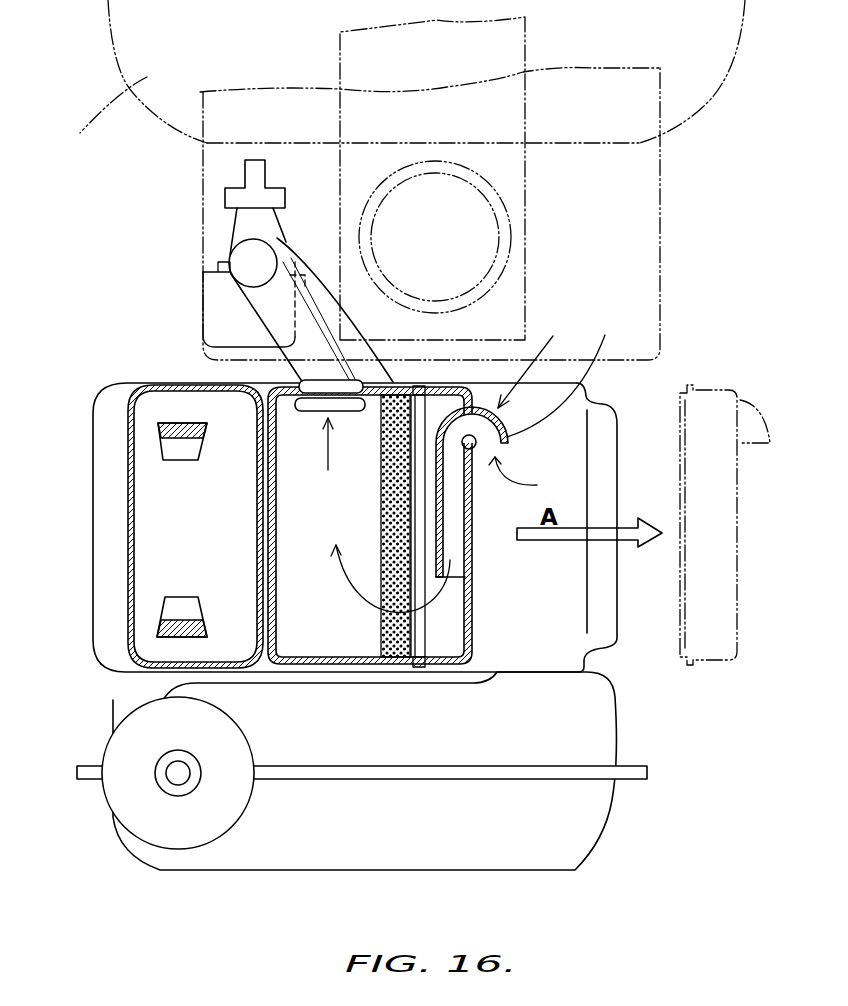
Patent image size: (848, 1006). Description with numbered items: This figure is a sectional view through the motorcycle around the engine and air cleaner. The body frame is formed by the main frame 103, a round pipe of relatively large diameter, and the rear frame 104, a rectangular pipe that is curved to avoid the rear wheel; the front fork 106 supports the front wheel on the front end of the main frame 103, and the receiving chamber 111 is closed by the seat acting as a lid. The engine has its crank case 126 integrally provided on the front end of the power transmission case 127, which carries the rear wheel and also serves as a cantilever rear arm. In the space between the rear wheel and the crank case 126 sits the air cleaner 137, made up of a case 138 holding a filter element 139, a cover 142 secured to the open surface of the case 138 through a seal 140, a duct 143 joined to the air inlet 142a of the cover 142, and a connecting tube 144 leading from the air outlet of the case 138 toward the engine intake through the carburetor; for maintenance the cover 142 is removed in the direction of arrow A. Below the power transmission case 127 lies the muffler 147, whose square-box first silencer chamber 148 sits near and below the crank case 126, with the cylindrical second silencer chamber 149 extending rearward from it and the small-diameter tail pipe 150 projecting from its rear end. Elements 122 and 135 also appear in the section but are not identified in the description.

The main frame 103 is at (500, 242).
The rear frame 104 is at (513, 97).
The front fork 106 is at (285, 193).
The receiving chamber 111 is at (403, 84).
The engine compartment 122 is at (662, 207).
The crank case 126 is at (568, 668).
The power transmission case 127 is at (103, 588).
The baffle 135 is at (160, 436).
The air cleaner 137 is at (541, 363).
The case 138 is at (345, 662).
The filter element 139 is at (397, 410).
The seal 140 is at (411, 660).
The cover 142 is at (731, 529).
The air inlet 142a is at (470, 405).
The duct 143 is at (567, 402).
The connecting tube 144 is at (262, 310).
The muffler 147 is at (622, 750).
The first silencer chamber 148 is at (285, 852).
The second silencer chamber 149 is at (113, 726).
The tail pipe 150 is at (172, 793).